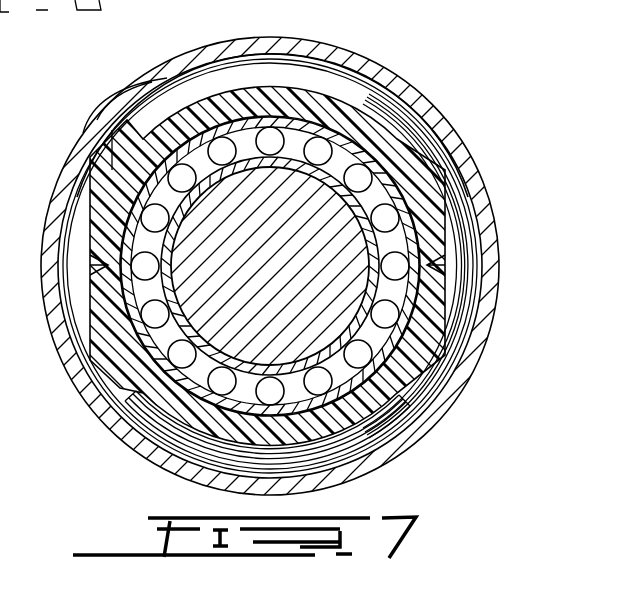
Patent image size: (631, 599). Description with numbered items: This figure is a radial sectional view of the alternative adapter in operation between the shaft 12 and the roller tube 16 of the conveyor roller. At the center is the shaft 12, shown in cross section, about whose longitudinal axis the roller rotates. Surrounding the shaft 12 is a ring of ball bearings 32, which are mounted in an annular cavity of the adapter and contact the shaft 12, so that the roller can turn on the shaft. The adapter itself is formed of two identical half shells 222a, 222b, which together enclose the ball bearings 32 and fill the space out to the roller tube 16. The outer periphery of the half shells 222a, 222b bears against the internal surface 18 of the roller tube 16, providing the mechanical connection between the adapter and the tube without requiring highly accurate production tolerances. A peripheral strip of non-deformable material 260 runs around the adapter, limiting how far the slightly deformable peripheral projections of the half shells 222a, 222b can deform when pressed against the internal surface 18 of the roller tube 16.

The shaft 12 is at (347, 284).
The roller tube 16 is at (452, 143).
The internal surface 18 is at (326, 62).
The ball bearings 32 is at (345, 135).
The half shell 222a is at (213, 56).
The half shell 222b is at (151, 431).
The peripheral strip of non-deformable material 260 is at (480, 236).